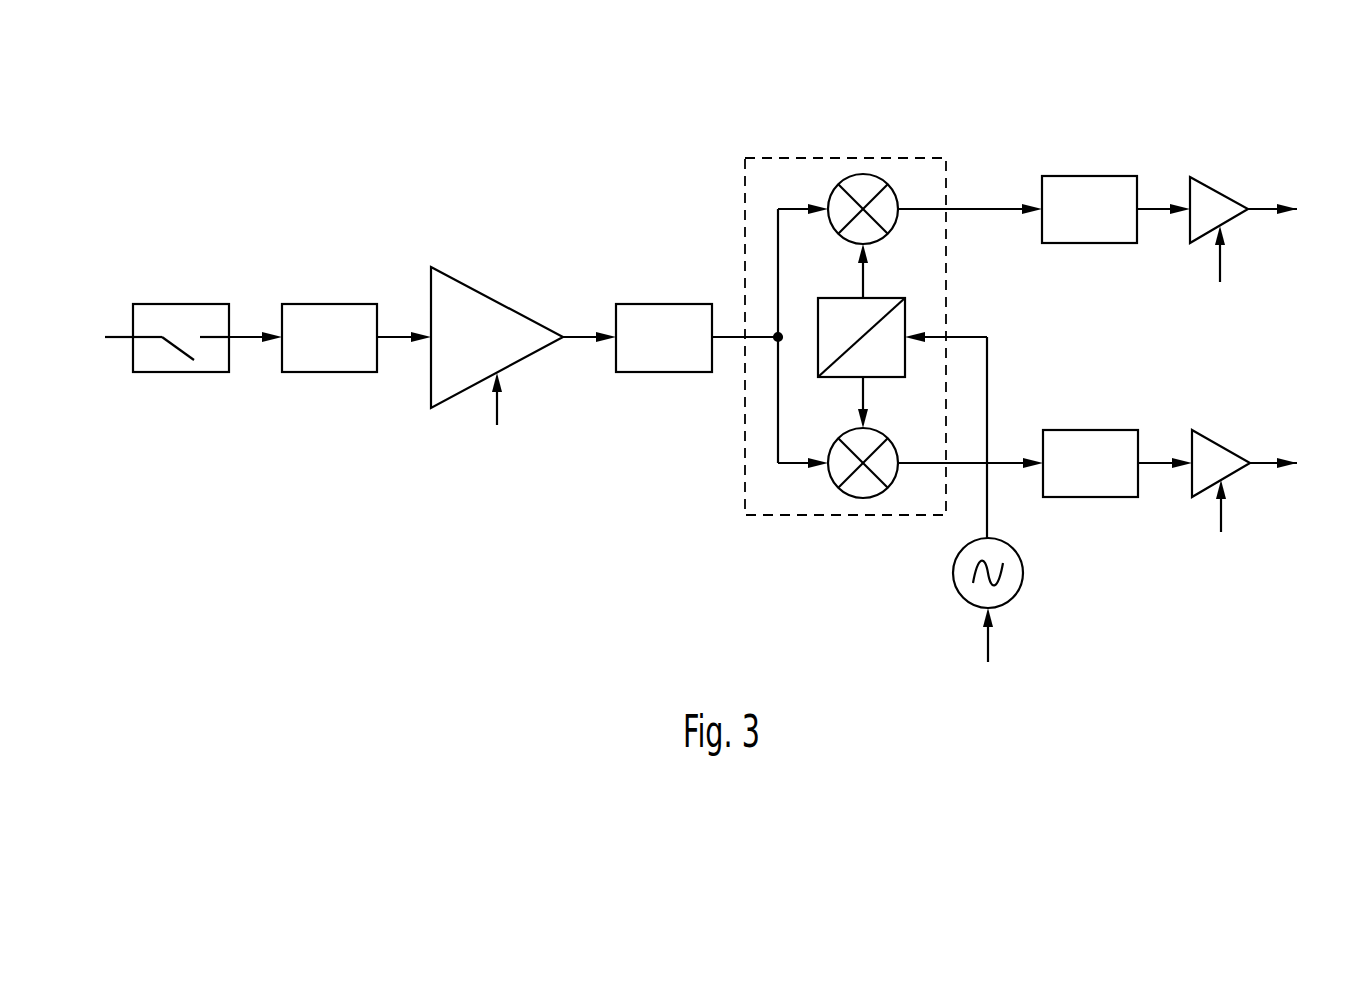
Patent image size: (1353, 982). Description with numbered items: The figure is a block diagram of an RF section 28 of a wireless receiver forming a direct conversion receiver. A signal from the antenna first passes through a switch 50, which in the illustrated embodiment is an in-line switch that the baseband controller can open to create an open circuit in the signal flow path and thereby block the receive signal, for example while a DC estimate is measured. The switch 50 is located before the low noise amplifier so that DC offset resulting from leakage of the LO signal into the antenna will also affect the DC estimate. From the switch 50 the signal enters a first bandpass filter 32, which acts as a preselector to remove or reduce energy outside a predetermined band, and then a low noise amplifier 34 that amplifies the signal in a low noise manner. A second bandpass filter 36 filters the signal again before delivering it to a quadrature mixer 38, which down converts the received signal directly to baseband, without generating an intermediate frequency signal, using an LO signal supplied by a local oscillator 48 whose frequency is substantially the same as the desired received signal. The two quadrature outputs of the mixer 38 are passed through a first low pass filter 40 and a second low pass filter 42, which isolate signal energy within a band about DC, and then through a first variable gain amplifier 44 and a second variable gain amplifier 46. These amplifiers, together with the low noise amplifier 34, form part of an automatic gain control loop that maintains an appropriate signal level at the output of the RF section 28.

The RF section 28 is at (250, 100).
The switch 50 is at (210, 304).
The first bandpass filter 32 is at (358, 304).
The low noise amplifier 34 is at (495, 302).
The second bandpass filter 36 is at (692, 304).
The quadrature mixer 38 is at (928, 158).
The first low pass filter 40 is at (1116, 176).
The second low pass filter 42 is at (1119, 430).
The first variable gain amplifier 44 is at (1220, 195).
The second variable gain amplifier 46 is at (1222, 448).
The local oscillator 48 is at (1012, 549).